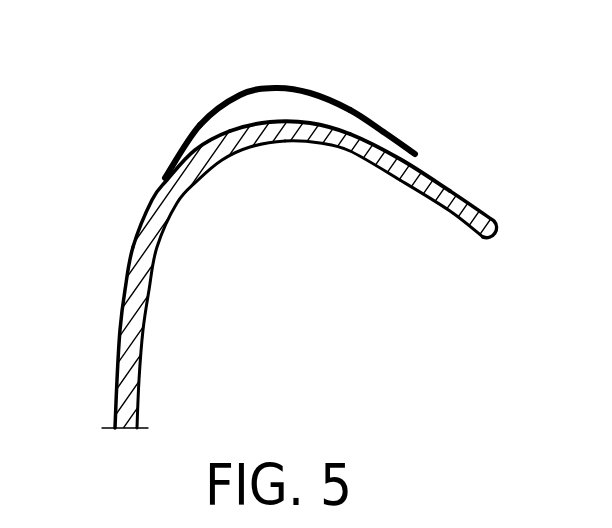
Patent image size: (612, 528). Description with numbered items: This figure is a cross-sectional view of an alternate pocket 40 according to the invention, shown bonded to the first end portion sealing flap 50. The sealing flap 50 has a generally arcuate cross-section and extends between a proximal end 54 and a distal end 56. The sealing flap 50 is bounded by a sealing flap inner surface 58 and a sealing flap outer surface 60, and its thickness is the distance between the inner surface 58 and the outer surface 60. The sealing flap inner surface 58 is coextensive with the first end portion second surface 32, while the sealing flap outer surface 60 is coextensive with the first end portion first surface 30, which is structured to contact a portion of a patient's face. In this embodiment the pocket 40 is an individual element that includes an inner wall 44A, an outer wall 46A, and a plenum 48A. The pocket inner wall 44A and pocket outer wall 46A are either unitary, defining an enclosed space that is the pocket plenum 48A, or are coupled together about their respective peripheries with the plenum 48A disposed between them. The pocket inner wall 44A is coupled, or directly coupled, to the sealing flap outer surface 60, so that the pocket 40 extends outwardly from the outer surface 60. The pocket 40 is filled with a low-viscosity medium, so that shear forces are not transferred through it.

The first end portion first surface 30 is at (306, 259).
The first end portion second surface 32 is at (310, 284).
The pocket 40 is at (242, 98).
The pocket inner wall 44A is at (274, 141).
The pocket outer wall 46A is at (181, 153).
The pocket plenum 48A is at (274, 106).
The first end portion sealing flap 50 is at (340, 148).
The proximal end 54 is at (114, 407).
The distal end 56 is at (491, 217).
The sealing flap inner surface 58 is at (214, 163).
The sealing flap outer surface 60 is at (413, 157).